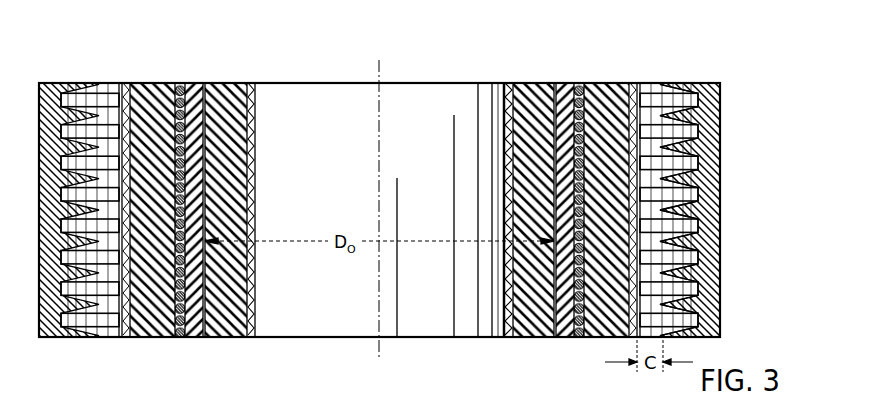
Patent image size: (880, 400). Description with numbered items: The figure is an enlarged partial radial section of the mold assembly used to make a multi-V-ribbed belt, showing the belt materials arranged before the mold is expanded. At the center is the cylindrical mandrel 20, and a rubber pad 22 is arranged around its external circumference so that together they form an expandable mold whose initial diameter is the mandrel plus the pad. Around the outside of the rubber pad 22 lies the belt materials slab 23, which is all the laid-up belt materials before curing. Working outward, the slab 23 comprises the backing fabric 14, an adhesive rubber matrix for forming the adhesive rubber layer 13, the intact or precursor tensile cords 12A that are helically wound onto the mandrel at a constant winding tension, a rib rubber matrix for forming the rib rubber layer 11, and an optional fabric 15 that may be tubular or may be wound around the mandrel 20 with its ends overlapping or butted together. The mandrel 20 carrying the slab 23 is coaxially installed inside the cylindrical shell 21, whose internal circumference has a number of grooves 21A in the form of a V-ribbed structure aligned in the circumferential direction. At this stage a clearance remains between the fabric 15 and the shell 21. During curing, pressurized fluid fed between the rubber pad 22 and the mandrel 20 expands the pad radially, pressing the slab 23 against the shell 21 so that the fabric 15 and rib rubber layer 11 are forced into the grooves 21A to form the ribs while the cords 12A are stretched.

The rib rubber layer 11 is at (620, 82).
The precursor tensile cords 12A is at (605, 82).
The adhesive rubber layer 13 is at (562, 82).
The backing fabric 14 is at (537, 82).
The fabric 15 is at (677, 98).
The cylindrical mandrel 20 is at (436, 95).
The cylindrical shell 21 is at (722, 170).
The grooves 21A is at (641, 132).
The rubber pad 22 is at (527, 82).
The belt materials slab 23 is at (602, 353).